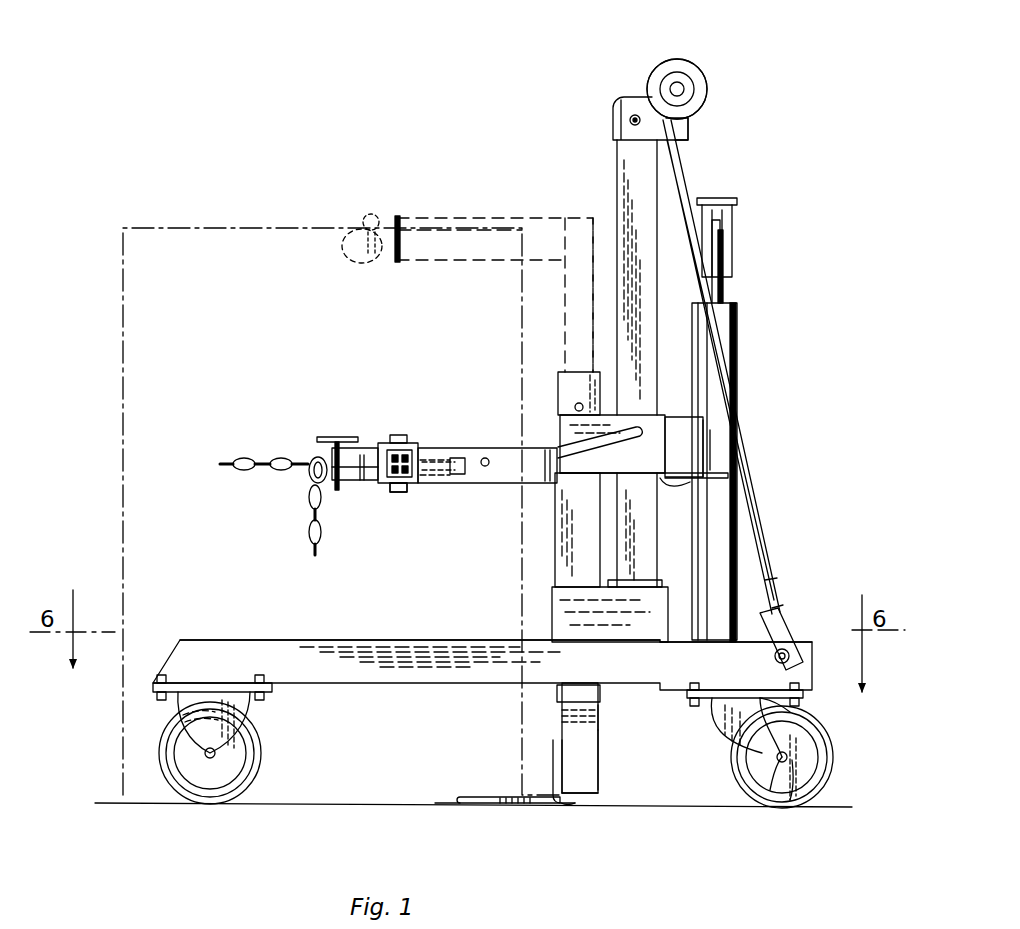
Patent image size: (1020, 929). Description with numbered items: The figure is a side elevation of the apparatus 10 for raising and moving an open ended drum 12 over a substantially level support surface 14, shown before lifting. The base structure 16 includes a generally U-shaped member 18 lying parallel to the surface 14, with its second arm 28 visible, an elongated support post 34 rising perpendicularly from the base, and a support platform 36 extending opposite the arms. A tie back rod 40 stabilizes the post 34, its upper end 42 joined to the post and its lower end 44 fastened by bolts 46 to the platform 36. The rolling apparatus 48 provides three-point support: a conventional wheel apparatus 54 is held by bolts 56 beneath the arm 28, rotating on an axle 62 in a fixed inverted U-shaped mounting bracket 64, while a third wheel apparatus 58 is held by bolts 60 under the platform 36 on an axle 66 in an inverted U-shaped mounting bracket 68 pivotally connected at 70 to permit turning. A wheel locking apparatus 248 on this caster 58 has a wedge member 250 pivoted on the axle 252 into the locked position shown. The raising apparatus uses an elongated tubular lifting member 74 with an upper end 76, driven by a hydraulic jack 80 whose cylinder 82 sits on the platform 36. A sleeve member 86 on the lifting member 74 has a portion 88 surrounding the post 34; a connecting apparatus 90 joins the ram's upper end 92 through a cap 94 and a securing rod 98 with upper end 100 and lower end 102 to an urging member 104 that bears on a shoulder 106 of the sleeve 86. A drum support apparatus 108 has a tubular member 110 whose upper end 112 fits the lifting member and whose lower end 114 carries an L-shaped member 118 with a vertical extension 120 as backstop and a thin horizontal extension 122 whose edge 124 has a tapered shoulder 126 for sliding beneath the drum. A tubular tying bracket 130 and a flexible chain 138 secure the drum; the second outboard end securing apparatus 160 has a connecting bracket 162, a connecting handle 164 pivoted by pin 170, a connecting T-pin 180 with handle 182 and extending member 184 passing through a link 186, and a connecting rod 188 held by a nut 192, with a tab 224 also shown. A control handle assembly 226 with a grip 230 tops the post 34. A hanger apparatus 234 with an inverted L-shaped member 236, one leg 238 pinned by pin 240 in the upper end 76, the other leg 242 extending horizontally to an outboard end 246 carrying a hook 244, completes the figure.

The apparatus 10 is at (702, 52).
The open ended drum 12 is at (192, 224).
The substantially level support surface 14 is at (840, 805).
The base structure 16 is at (806, 634).
The U-shaped member 18 is at (342, 640).
The second arm 28 is at (446, 640).
The elongated support post 34 is at (612, 152).
The support platform 36 is at (788, 625).
The second tie back rod 40 is at (682, 160).
The upper end 42 is at (690, 128).
The lower end 44 is at (762, 590).
The bolts 46 is at (790, 657).
The rolling apparatus 48 is at (152, 686).
The second conventional wheel apparatus 54 is at (160, 750).
The bolts 56 is at (158, 697).
The conventional wheel apparatus 58 is at (832, 731).
The bolts 60 is at (806, 692).
The axle 62 is at (216, 756).
The fixed inverted U-shaped mounting bracket 64 is at (246, 708).
The axle 66 is at (778, 760).
The inverted U-shaped mounting bracket 68 is at (742, 735).
The pivotal connection 70 is at (800, 720).
The elongated tubular lifting member 74 is at (560, 560).
The upper end 76 is at (560, 370).
The hydraulic jack 80 is at (742, 306).
The cylinder 82 is at (740, 340).
The sleeve member 86 is at (637, 476).
The portion 88 is at (652, 470).
The connecting apparatus 90 is at (736, 198).
The upper end of the ram 92 is at (733, 260).
The cap 94 is at (740, 212).
The second securing rod 98 is at (712, 425).
The upper end 100 is at (728, 232).
The lower end 102 is at (717, 470).
The urging member 104 is at (722, 478).
The shoulder 106 is at (690, 482).
The drum support apparatus 108 is at (555, 720).
The tubular member 110 is at (592, 765).
The upper end 112 is at (592, 722).
The lower end 114 is at (592, 792).
The L-shaped member 118 is at (570, 808).
The vertical extension 120 is at (552, 760).
The horizontal extension 122 is at (530, 797).
The edge 124 is at (466, 796).
The tapered shoulder 126 is at (456, 800).
The tubular tying bracket 130 is at (548, 483).
The flexible member 138 is at (252, 470).
The second outboard end securing apparatus 160 is at (402, 440).
The connecting bracket 162 is at (552, 440).
The connecting handle 164 is at (560, 425).
The pin 170 is at (484, 466).
The connecting T-pin 180 is at (346, 482).
The handle 182 is at (352, 437).
The extending member 184 is at (326, 500).
The link 186 is at (316, 458).
The connecting rod 188 is at (455, 460).
The nut 192 is at (365, 462).
The clamp tab 224 is at (398, 494).
The control handle assembly 226 is at (656, 60).
The left grip 230 is at (704, 85).
The hanger apparatus 234 is at (472, 215).
The inverted generally L-shaped member 236 is at (593, 215).
The leg 238 is at (566, 338).
The pin 240 is at (576, 404).
The other leg 242 is at (470, 263).
The hook 244 is at (352, 252).
The outboard end 246 is at (395, 216).
The wheel locking apparatus 248 is at (802, 757).
The wedge member 250 is at (790, 792).
The axle 252 is at (776, 782).